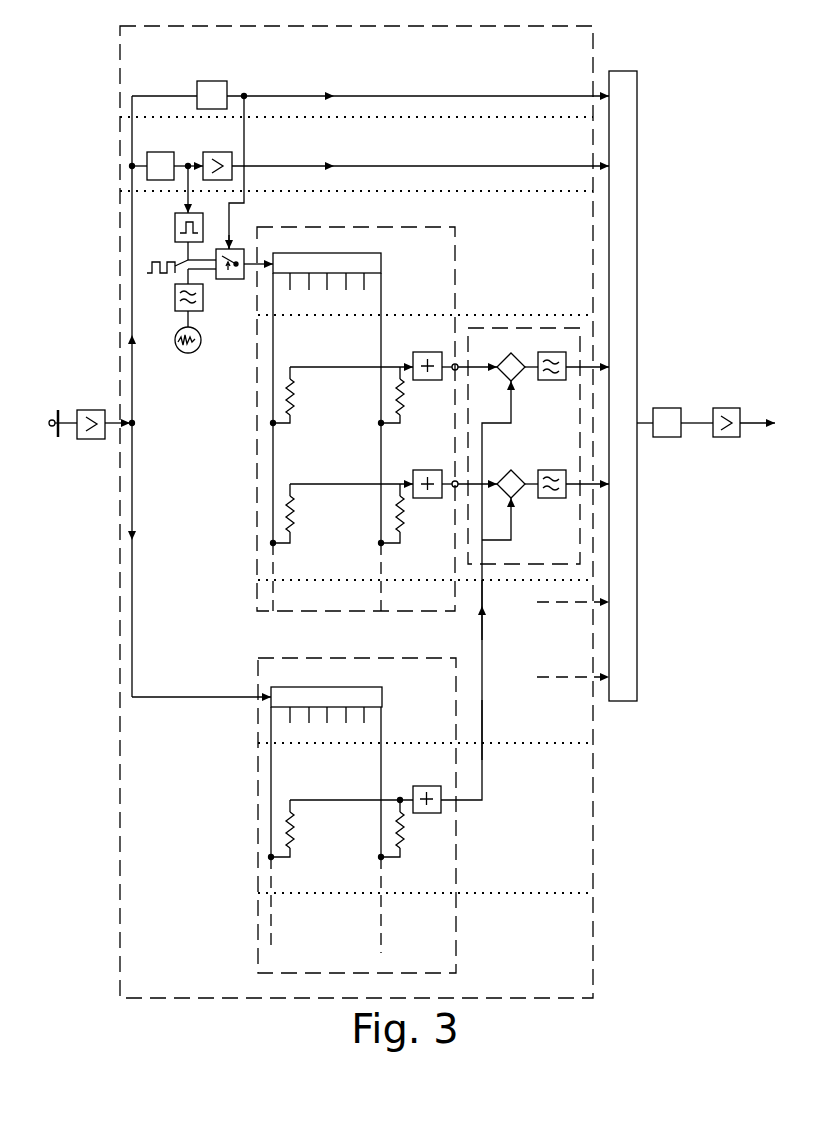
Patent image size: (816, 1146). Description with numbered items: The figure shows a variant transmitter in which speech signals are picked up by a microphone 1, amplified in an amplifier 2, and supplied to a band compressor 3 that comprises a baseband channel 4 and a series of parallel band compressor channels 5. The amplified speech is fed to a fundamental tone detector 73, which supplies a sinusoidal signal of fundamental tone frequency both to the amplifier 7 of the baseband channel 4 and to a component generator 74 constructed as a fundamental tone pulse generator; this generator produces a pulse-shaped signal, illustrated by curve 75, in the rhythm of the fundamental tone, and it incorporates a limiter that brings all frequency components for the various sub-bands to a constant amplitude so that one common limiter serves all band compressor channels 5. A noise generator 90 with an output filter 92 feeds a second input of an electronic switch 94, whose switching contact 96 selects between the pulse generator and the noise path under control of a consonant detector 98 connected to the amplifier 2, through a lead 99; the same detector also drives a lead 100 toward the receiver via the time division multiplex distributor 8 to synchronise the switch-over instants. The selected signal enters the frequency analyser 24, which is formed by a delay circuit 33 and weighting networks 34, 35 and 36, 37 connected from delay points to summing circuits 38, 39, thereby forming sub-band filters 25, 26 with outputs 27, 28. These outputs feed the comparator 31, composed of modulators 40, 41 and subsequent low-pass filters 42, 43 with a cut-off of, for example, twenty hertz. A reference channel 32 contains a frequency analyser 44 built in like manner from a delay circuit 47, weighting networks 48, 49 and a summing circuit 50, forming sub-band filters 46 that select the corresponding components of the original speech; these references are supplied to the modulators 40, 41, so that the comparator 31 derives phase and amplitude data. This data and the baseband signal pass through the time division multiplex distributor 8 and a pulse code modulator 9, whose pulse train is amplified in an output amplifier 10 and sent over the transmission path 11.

The microphone 1 is at (59, 410).
The amplifier 2 is at (93, 410).
The band compressor 3 is at (597, 45).
The baseband channel 4 is at (537, 175).
The band compressor channels 5 is at (482, 315).
The amplifier 7 is at (220, 138).
The time division multiplex distributor 8 is at (637, 137).
The pulse code modulator 9 is at (665, 408).
The output amplifier 10 is at (727, 408).
The transmission path 11 is at (767, 420).
The frequency analyser 24 is at (257, 505).
The sub-band filter 25 is at (334, 430).
The sub-band filter 26 is at (325, 563).
The output 27 is at (457, 370).
The output 28 is at (455, 487).
The comparator 31 is at (525, 566).
The reference channel 32 is at (512, 745).
The delay circuit 33 is at (381, 264).
The weighting network 34 is at (298, 400).
The weighting network 35 is at (406, 405).
The weighting network 36 is at (298, 517).
The weighting network 37 is at (406, 522).
The summing circuit 38 is at (430, 352).
The summing circuit 39 is at (430, 470).
The modulator 40 is at (512, 353).
The modulator 41 is at (520, 496).
The low-pass filter 42 is at (552, 352).
The low-pass filter 43 is at (552, 470).
The frequency analyser 44 is at (258, 683).
The sub-band filters 46 is at (332, 870).
The delay circuit 47 is at (382, 697).
The weighting network 48 is at (298, 826).
The weighting network 49 is at (406, 838).
The summing circuit 50 is at (424, 786).
The fundamental tone detector 73 is at (170, 136).
The component generator 74 is at (175, 229).
The curve 75 is at (147, 268).
The noise generator 90 is at (175, 342).
The output filter 92 is at (175, 294).
The electronic switch 94 is at (230, 279).
The switching contact 96 is at (240, 249).
The consonant detector 98 is at (218, 81).
The lead 99 is at (246, 203).
The lead 100 is at (495, 96).